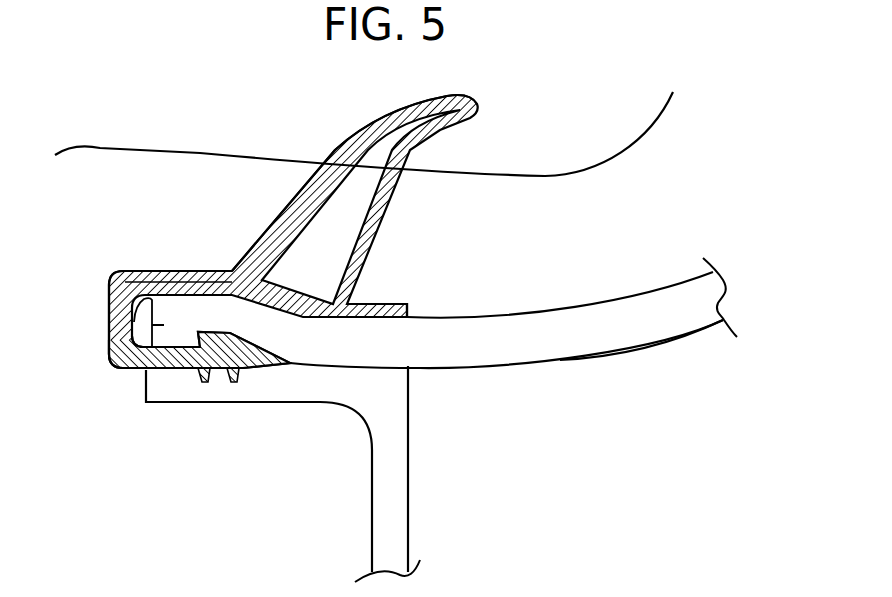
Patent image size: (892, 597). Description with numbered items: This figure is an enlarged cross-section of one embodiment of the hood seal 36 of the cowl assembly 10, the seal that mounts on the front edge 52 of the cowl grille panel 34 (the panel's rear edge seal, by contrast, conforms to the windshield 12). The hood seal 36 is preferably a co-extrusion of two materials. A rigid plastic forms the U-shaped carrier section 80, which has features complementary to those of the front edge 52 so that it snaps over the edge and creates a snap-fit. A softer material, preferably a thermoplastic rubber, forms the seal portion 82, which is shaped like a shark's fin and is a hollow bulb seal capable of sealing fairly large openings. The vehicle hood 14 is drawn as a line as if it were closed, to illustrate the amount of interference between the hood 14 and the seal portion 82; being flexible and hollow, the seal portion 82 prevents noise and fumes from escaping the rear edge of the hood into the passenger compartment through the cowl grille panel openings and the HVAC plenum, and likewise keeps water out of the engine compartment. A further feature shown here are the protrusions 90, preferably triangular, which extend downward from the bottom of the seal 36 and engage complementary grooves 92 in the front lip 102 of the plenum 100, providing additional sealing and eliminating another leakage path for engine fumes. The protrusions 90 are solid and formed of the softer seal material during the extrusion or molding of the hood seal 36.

The cowl assembly 10 is at (554, 303).
The windshield 12 is at (675, 5).
The vehicle hood 14 is at (554, 162).
The cowl grille panel 34 is at (567, 341).
The hood seal 36 is at (218, 232).
The front edge 52 is at (112, 290).
The U-shaped carrier section 80 is at (152, 283).
The seal portion 82 is at (295, 191).
The protrusions 90 is at (205, 382).
The grooves 92 is at (234, 382).
The plenum 100 is at (418, 441).
The front lip 102 is at (160, 383).